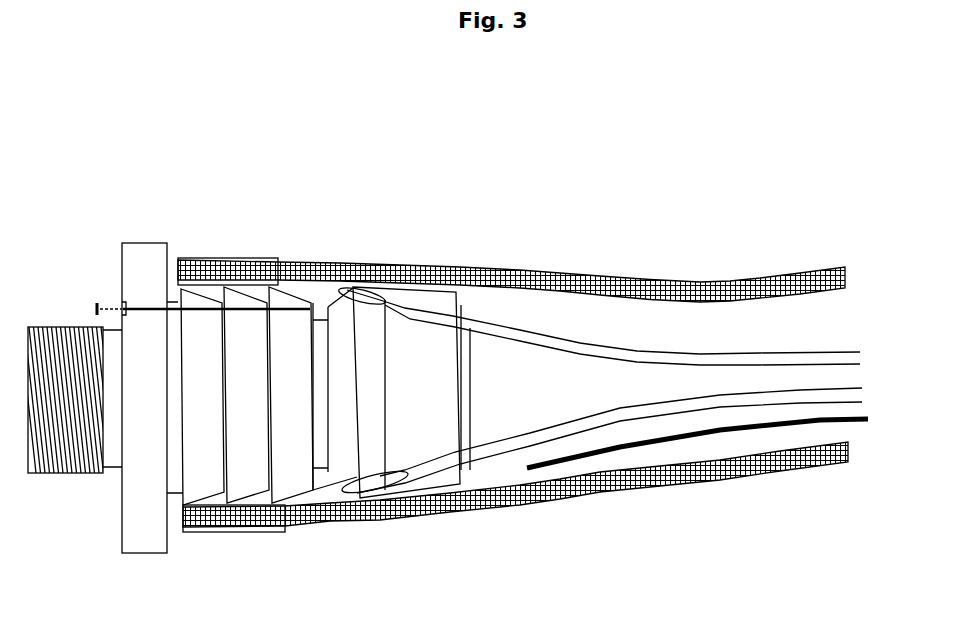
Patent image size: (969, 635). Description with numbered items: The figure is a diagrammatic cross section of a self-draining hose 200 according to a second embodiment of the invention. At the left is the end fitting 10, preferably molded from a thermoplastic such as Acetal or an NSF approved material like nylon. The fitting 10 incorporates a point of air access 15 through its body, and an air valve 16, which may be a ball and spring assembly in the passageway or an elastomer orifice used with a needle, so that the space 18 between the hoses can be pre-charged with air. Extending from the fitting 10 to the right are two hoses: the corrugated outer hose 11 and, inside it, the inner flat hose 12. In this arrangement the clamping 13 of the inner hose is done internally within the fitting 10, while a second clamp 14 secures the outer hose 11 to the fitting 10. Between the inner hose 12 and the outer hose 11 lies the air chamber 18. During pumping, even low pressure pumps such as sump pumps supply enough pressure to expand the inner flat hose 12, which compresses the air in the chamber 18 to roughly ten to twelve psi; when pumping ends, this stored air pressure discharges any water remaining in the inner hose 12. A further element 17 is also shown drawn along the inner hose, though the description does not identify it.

The self-draining hose 200 is at (737, 111).
The end fitting 10 is at (144, 398).
The outer hose 11 is at (504, 263).
The inner flat hose 12 is at (646, 340).
The clamping 13 is at (430, 493).
The second clamp 14 is at (247, 544).
The point of air access 15 is at (111, 292).
The air valve 16 is at (81, 309).
The curved element 17 is at (713, 444).
The air chamber 18 is at (825, 323).